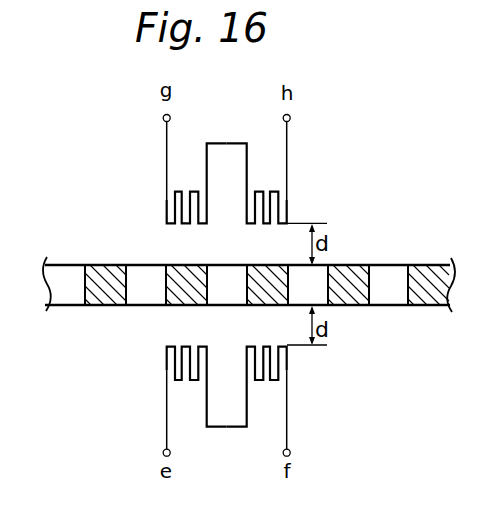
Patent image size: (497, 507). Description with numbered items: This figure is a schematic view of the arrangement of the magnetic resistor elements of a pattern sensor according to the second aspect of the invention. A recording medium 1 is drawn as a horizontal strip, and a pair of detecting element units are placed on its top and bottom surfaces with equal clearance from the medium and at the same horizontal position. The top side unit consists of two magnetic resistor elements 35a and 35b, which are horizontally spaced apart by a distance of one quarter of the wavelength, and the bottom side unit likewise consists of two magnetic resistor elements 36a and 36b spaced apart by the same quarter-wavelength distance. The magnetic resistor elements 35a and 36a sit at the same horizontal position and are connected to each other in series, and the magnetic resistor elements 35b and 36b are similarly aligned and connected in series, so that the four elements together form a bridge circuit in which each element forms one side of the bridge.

The recording medium 1 is at (65, 312).
The magnetic resistor element 35a is at (166, 206).
The magnetic resistor element 35b is at (287, 203).
The magnetic resistor element 36a is at (166, 363).
The magnetic resistor element 36b is at (287, 372).